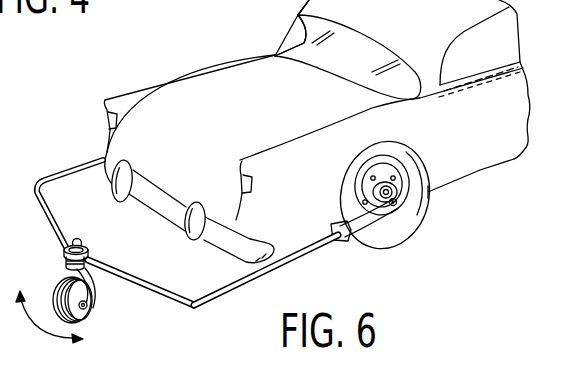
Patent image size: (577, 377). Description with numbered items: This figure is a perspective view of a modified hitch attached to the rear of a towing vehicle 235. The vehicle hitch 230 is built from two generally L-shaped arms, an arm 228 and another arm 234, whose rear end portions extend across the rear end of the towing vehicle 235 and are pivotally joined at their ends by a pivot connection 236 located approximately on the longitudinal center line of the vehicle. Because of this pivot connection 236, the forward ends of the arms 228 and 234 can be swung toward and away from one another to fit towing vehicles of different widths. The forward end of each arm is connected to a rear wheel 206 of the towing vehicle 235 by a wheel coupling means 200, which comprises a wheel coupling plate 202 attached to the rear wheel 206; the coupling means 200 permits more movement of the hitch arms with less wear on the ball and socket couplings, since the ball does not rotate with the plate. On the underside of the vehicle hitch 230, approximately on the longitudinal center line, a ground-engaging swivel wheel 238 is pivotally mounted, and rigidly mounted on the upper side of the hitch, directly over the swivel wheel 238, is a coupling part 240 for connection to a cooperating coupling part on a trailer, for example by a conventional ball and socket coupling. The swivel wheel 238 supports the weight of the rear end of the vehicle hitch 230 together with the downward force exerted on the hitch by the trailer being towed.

The wheel coupling means 200 is at (397, 188).
The wheel coupling plate 202 is at (388, 169).
The rear wheel 206 is at (397, 236).
The arm 228 is at (254, 280).
The vehicle hitch 230 is at (174, 291).
The other arm 234 is at (82, 166).
The towing vehicle 235 is at (297, 8).
The pivot connection 236 is at (89, 247).
The ground-engaging swivel wheel 238 is at (94, 311).
The coupling part 240 is at (78, 238).